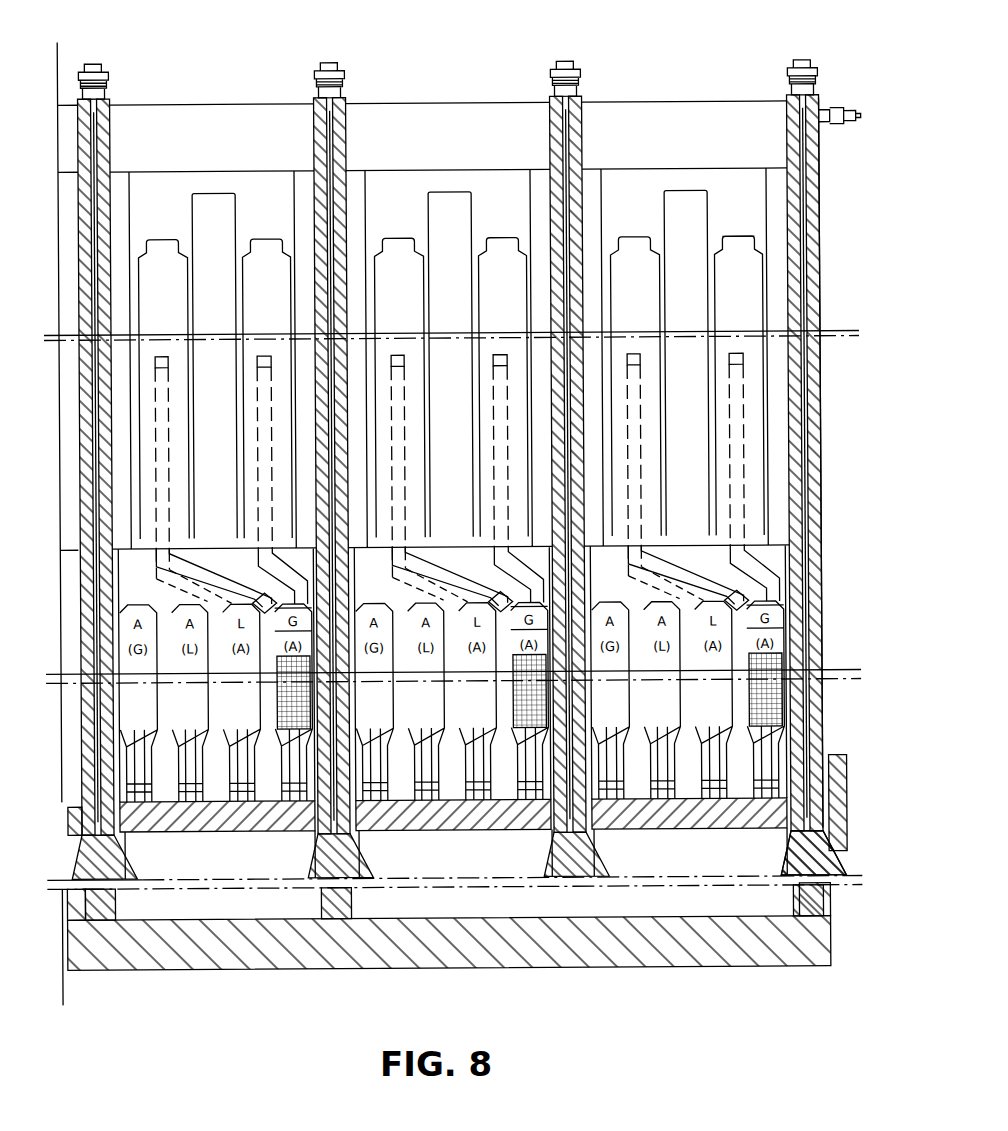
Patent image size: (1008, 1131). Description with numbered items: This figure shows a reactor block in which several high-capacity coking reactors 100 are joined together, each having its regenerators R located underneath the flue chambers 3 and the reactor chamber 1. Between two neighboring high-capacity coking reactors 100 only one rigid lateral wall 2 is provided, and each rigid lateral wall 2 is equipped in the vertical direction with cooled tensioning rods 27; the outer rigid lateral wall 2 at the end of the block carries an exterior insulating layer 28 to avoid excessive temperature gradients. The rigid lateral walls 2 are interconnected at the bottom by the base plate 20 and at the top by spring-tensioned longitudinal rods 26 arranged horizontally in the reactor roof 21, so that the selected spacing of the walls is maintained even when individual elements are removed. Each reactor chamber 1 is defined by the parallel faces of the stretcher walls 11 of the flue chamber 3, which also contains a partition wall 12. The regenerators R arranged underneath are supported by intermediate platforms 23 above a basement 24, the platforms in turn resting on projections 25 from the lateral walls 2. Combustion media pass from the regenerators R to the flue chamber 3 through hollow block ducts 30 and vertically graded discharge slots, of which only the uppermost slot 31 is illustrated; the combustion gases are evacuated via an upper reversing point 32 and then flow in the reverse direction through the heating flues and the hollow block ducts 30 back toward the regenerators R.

The reactor chamber 1 is at (214, 365).
The flue chamber 3 is at (215, 389).
The rigid lateral wall 2 is at (85, 452).
The stretcher wall 11 is at (713, 422).
The partition wall 12 is at (765, 382).
The base plate 20 is at (147, 953).
The reactor roof 21 is at (665, 125).
The intermediate platform 23 is at (670, 832).
The basement 24 is at (740, 853).
The projection 25 is at (762, 853).
The spring-tensioned longitudinal rod 26 is at (842, 110).
The cooled tensioning rod 27 is at (106, 73).
The insulating layer 28 is at (846, 790).
The hollow block duct 30 is at (742, 487).
The uppermost discharge slot 31 is at (746, 358).
The upper reversing point 32 is at (740, 240).
The high-capacity coking reactor 100 is at (214, 97).
The regenerator R is at (766, 702).